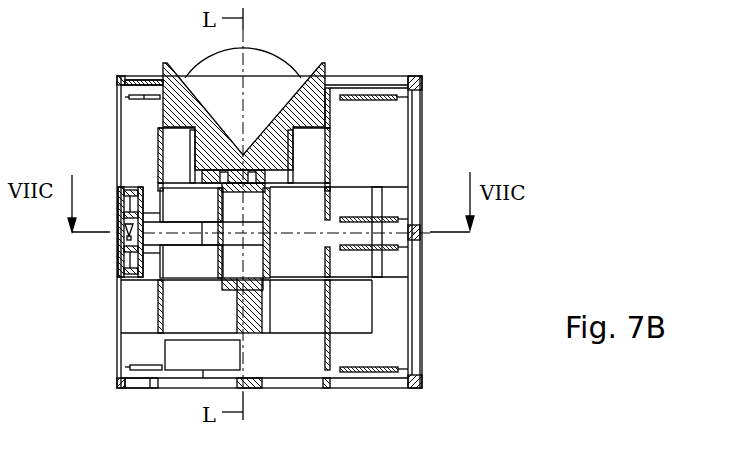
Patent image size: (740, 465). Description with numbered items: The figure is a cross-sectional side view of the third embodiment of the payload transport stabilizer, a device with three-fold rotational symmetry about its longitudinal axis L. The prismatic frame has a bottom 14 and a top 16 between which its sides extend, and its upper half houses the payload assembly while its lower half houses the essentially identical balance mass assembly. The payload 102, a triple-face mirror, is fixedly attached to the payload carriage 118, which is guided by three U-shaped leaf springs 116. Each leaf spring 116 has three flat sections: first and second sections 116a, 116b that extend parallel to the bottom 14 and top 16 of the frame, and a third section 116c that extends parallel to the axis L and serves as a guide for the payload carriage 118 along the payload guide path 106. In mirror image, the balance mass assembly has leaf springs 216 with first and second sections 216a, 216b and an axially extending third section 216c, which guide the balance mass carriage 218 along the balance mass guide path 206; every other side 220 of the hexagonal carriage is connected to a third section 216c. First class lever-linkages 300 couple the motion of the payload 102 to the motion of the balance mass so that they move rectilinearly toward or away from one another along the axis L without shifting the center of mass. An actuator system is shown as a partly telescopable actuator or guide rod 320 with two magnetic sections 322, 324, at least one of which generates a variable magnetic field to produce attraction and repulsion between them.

The bottom 14 is at (345, 80).
The top 16 is at (327, 388).
The payload 102 is at (180, 108).
The payload guide path 106 is at (243, 193).
The leaf spring 116 is at (142, 95).
The first section 116a is at (357, 217).
The second section 116b is at (385, 95).
The third section 116c is at (330, 117).
The payload carriage 118 is at (158, 140).
The balance mass guide path 206 is at (243, 298).
The leaf spring 216 is at (187, 353).
The first section 216a is at (385, 373).
The second section 216b is at (356, 252).
The third section 216c is at (330, 348).
The balance mass carriage 218 is at (158, 325).
The side 220 is at (168, 456).
The first class lever-linkage 300 is at (117, 237).
The actuator or guide rod 320 is at (268, 236).
The magnetic section 322 is at (219, 203).
The magnetic section 324 is at (219, 259).